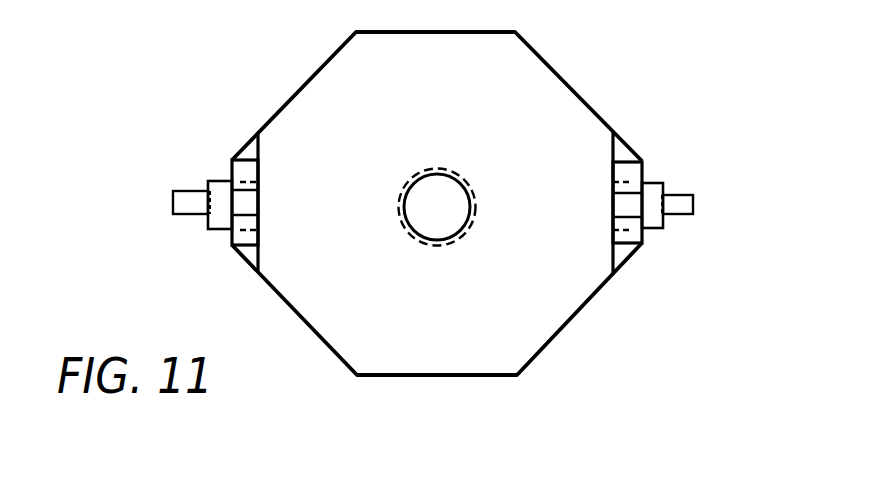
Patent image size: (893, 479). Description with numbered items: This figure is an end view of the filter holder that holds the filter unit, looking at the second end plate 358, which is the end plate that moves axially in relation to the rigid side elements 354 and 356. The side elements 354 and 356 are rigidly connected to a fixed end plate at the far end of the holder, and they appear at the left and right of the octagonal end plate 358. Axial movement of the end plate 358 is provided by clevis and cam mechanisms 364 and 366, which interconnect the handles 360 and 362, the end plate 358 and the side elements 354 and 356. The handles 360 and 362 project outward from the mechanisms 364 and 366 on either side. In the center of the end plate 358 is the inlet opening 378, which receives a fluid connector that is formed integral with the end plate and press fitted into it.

The rigid side element 354 is at (243, 158).
The rigid side element 356 is at (640, 160).
The second end plate 358 is at (559, 84).
The handle 360 is at (176, 204).
The handle 362 is at (694, 204).
The clevis and cam mechanism 364 is at (208, 181).
The clevis and cam mechanism 366 is at (663, 182).
The inlet opening 378 is at (451, 172).